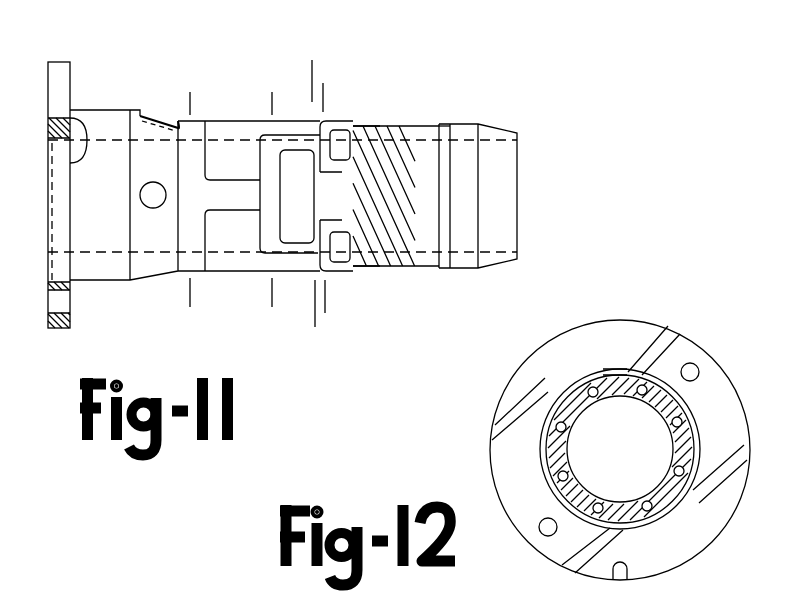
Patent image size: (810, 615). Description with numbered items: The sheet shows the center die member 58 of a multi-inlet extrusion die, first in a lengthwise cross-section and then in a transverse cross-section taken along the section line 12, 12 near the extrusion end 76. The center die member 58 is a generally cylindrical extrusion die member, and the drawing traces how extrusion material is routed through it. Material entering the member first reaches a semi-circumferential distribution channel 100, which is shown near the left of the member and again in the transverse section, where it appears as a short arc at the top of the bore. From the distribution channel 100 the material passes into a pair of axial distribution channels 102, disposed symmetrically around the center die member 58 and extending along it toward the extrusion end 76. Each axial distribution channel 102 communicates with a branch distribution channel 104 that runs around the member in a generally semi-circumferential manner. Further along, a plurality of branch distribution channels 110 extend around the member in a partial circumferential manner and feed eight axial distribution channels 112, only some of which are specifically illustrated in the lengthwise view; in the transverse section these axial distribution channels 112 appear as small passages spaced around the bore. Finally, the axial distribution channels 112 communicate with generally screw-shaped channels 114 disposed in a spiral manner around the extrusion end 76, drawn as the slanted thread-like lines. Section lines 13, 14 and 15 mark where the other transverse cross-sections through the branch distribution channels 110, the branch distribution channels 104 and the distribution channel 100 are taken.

In FIG. 11, the center die member 58 is at (460, 13).
In FIG. 11, the extrusion end 76 is at (433, 125).
In FIG. 11, the semi-circumferential distribution channel 100 is at (145, 112).
In FIG. 12, the semi-circumferential distribution channel 100 is at (616, 368).
In FIG. 11, the axial distribution channels 102 is at (228, 203).
In FIG. 11, the branch distribution channel 104 is at (278, 173).
In FIG. 11, the branch distribution channels 110 is at (362, 124).
In FIG. 11, the axial distribution channels 112 is at (345, 119).
In FIG. 12, the axial distribution channels 112 is at (686, 480).
In FIG. 11, the screw-shaped channels 114 is at (383, 125).
In FIG. 11, the section line 12- 12 is at (312, 67).
In FIG. 11, the section line 13- 13 is at (356, 97).
In FIG. 11, the section line 14- 14 is at (268, 103).
In FIG. 11, the section line 15- 15 is at (186, 103).